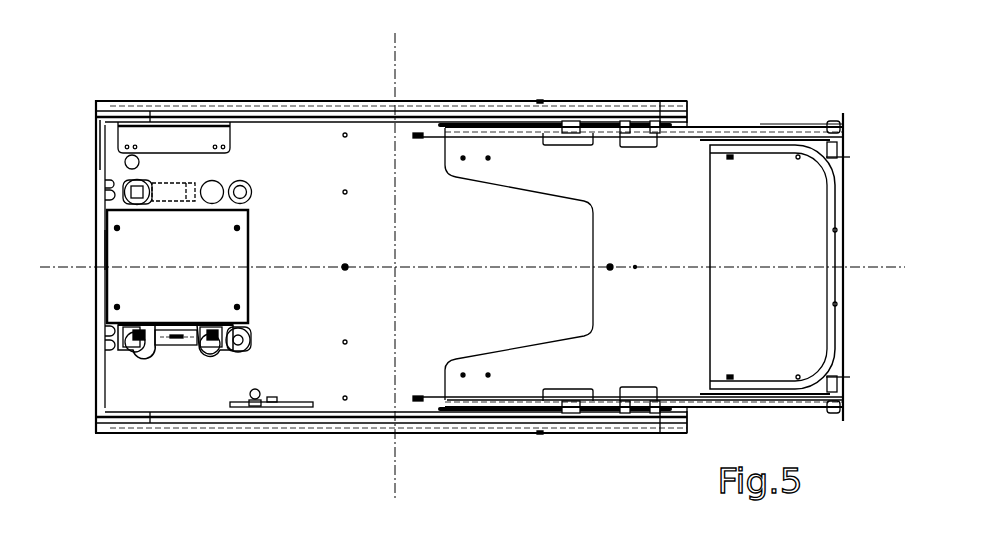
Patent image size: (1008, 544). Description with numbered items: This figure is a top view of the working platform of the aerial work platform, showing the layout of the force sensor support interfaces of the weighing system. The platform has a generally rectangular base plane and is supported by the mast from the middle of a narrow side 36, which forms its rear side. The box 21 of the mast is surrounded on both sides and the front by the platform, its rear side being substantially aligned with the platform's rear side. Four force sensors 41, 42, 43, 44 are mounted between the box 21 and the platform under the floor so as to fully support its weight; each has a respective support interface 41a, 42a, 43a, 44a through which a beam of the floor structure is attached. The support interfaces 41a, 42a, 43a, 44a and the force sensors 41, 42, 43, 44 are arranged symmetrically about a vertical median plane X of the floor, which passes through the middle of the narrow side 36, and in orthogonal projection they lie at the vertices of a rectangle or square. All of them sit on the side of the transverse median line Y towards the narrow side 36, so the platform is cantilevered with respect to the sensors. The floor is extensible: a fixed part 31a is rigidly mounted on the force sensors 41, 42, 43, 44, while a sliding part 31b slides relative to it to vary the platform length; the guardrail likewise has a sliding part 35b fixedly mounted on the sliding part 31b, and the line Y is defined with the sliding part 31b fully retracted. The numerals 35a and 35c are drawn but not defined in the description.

The box 21 is at (163, 277).
The fixed part 31a is at (408, 277).
The sliding part 31b is at (777, 277).
The first plane 35a is at (398, 100).
The sliding part 35b is at (803, 127).
The third plane 35c is at (104, 248).
The narrow side 36 is at (65, 138).
The force sensor 41 is at (172, 355).
The support interface 41a is at (137, 355).
The force sensor 42 is at (205, 355).
The support interface 42a is at (240, 355).
The force sensor 43 is at (170, 182).
The support interface 43a is at (133, 180).
The force sensor 44 is at (212, 180).
The support interface 44a is at (240, 180).
The vertical median plane X is at (68, 266).
The transverse median line Y is at (397, 473).